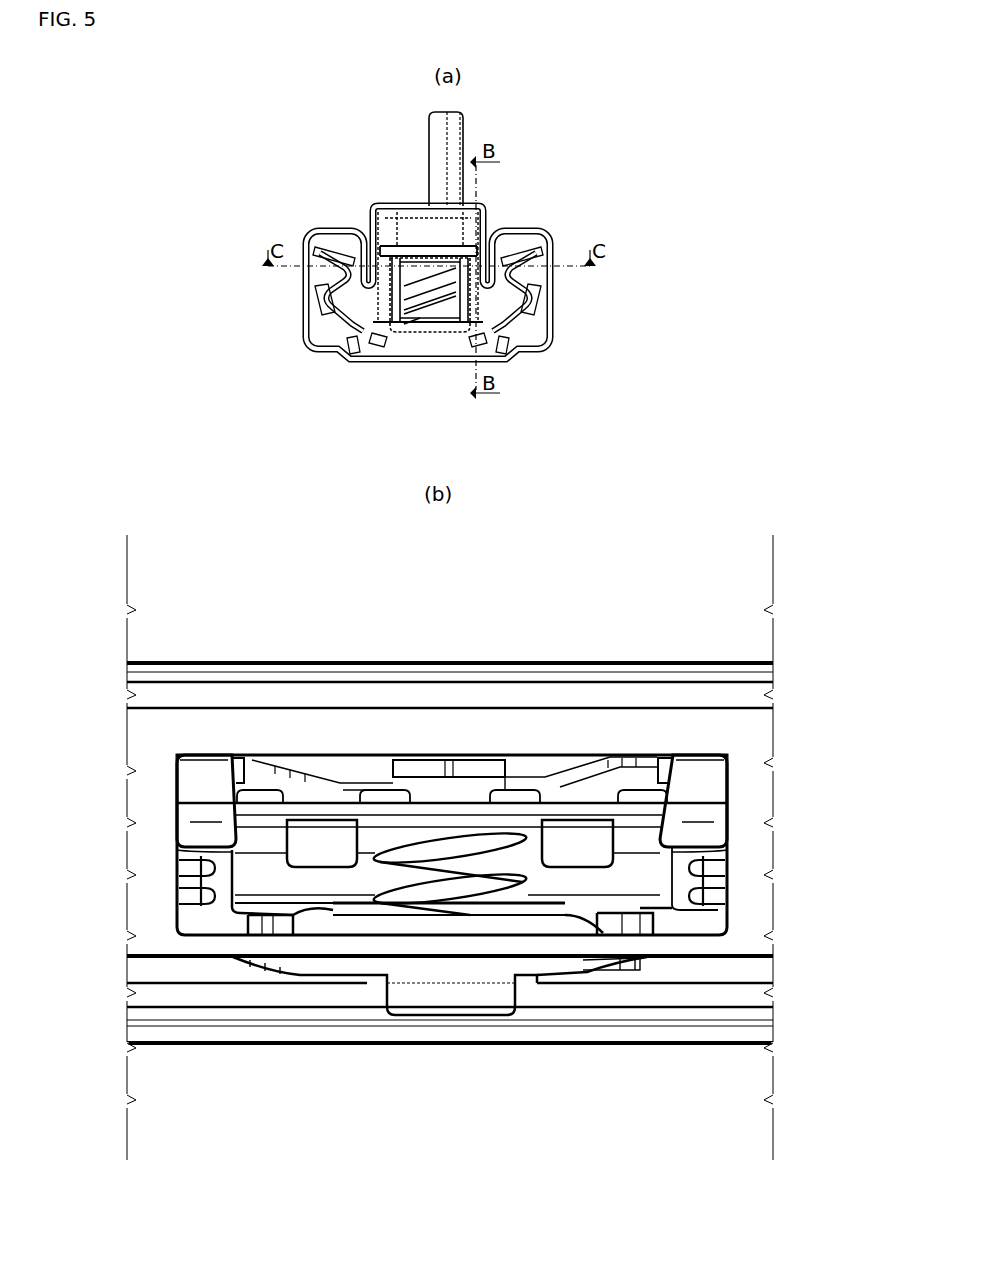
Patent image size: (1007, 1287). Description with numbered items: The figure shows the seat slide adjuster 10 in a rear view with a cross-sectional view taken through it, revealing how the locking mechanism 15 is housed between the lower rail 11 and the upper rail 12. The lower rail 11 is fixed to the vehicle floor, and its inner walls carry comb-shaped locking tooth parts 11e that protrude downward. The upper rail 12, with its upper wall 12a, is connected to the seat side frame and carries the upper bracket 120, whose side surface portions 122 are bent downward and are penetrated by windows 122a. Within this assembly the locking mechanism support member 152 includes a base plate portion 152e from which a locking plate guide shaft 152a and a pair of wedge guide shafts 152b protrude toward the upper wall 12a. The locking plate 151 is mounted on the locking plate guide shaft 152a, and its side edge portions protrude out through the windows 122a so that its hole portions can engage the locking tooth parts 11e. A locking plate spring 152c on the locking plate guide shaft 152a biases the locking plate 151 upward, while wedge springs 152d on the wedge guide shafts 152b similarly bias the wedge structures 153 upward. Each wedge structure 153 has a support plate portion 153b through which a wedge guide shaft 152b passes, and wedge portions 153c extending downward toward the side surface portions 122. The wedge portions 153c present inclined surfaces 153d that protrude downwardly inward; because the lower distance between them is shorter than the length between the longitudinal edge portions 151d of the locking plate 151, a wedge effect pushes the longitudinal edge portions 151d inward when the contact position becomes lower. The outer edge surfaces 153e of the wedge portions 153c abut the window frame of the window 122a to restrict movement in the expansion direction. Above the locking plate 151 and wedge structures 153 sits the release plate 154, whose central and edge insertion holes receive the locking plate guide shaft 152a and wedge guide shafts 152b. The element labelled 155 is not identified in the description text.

The seat slide adjuster 10 is at (302, 147).
The lower rail 11 is at (556, 305).
The locking tooth part 11e is at (308, 852).
The upper rail 12 is at (391, 199).
The upper wall 12a is at (270, 665).
The locking mechanism 15 is at (411, 332).
The upper bracket 120 is at (411, 230).
The side surface portion 122 is at (748, 762).
The window 122a is at (549, 767).
The locking plate 151 is at (518, 800).
The longitudinal edge portion 151d is at (714, 863).
The locking mechanism support member 152 is at (666, 922).
The locking plate guide shaft 152a is at (468, 870).
The wedge guide shaft 152b is at (205, 880).
The locking plate spring 152c is at (463, 897).
The wedge spring 152d is at (208, 860).
The base plate portion 152e is at (370, 914).
The wedge structure 153 is at (196, 817).
The support plate portion 153b is at (232, 770).
The wedge portion 153c is at (200, 826).
The inclined surface 153d is at (250, 930).
The outer edge surface 153e is at (182, 760).
The release plate 154 is at (370, 789).
The operating shaft 155 is at (466, 114).